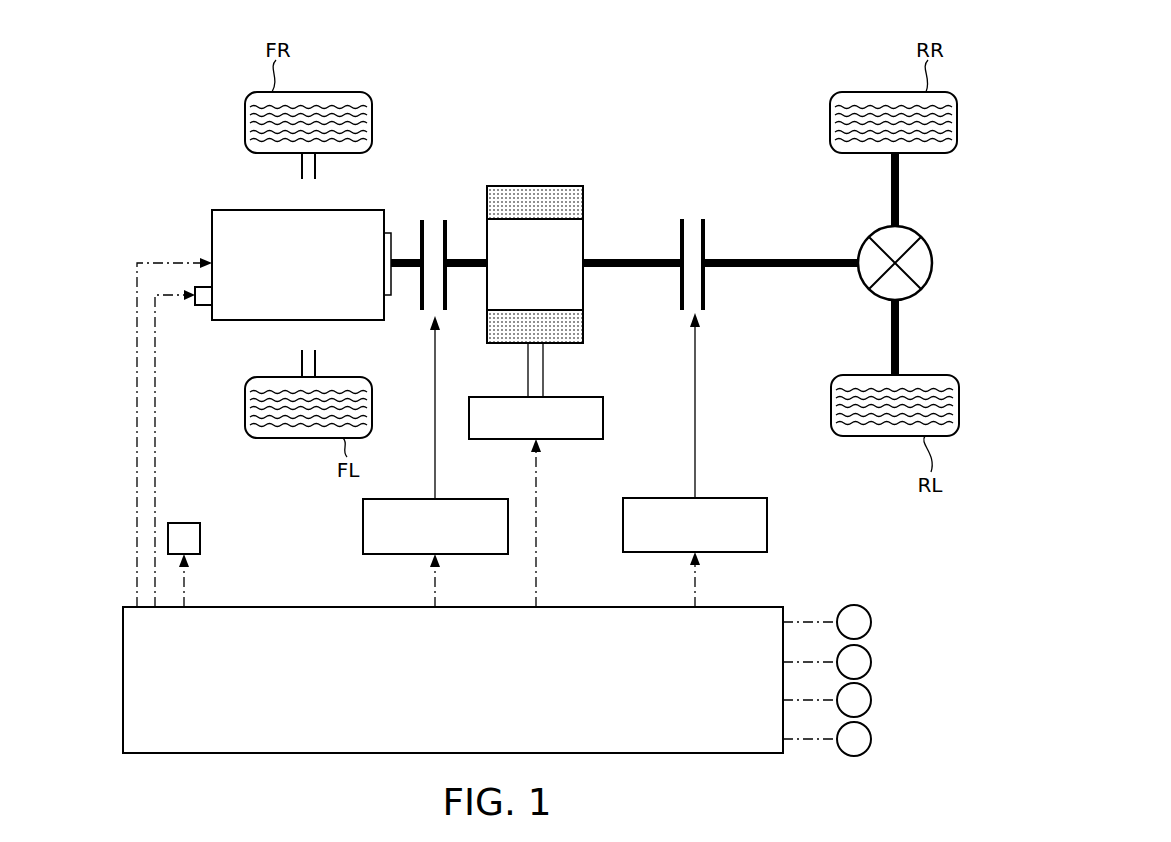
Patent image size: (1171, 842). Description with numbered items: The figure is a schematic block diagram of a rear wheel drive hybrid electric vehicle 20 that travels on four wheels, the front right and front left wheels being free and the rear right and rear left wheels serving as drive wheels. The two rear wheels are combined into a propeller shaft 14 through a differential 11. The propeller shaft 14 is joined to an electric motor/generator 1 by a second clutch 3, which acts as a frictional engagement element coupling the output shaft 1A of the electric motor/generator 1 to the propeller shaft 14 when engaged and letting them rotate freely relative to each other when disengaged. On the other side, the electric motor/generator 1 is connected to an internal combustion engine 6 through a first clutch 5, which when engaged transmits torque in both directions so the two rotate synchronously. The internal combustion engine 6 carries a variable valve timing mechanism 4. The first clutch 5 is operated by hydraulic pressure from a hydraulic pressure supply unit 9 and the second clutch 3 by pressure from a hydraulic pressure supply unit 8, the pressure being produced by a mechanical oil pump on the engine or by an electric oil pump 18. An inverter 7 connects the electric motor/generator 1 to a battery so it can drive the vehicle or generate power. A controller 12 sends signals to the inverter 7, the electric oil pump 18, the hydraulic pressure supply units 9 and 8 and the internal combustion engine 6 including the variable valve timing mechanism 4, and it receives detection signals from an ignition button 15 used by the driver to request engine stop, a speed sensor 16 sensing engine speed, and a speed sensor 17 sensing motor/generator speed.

The hybrid electric vehicle 20 is at (450, 68).
The internal combustion engine 6 is at (370, 210).
The first clutch 5 is at (448, 219).
The electric motor/generator 1 is at (546, 186).
The output shaft 1A is at (603, 258).
The second clutch 3 is at (708, 238).
The propeller shaft 14 is at (835, 260).
The differential 11 is at (932, 259).
The variable valve timing mechanism 4 is at (200, 306).
The inverter 7 is at (583, 440).
The hydraulic pressure supply unit 9 is at (397, 498).
The hydraulic pressure supply unit 8 is at (734, 497).
The electric oil pump 18 is at (183, 497).
The controller 12 is at (305, 606).
The ignition button 15 is at (871, 622).
The speed sensor 16 is at (871, 662).
The speed sensor 17 is at (871, 700).